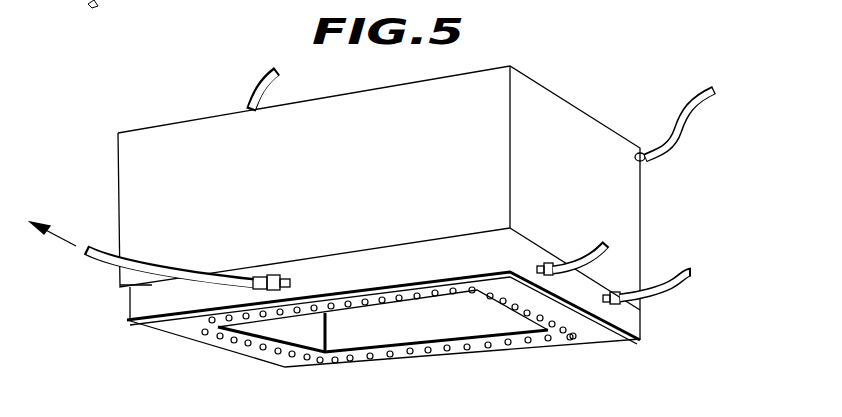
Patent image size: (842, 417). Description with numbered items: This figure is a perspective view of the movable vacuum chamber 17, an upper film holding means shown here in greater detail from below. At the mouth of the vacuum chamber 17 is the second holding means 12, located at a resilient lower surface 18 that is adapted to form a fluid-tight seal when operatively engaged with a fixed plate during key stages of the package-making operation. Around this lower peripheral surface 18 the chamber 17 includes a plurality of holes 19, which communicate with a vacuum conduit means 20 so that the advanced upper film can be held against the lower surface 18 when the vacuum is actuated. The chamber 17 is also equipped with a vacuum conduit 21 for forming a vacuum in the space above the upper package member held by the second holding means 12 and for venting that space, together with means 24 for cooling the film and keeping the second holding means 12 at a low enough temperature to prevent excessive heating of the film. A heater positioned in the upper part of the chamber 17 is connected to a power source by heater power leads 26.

The second holding means 12 is at (289, 358).
The movable vacuum chamber 17 is at (316, 182).
The resilient lower surface 18 is at (172, 326).
The holes 19 is at (427, 353).
The vacuum conduit means 20 is at (98, 262).
The vacuum conduit 21 is at (241, 102).
The cooling means 24 is at (655, 286).
The heater power leads 26 is at (686, 105).